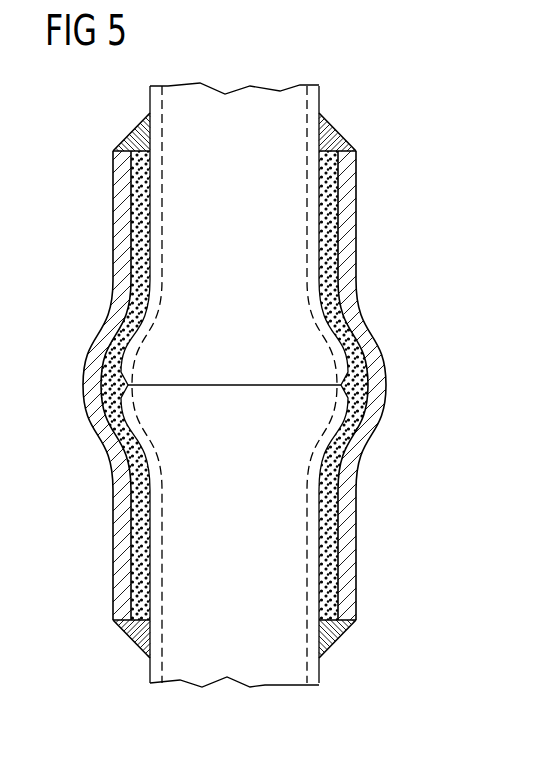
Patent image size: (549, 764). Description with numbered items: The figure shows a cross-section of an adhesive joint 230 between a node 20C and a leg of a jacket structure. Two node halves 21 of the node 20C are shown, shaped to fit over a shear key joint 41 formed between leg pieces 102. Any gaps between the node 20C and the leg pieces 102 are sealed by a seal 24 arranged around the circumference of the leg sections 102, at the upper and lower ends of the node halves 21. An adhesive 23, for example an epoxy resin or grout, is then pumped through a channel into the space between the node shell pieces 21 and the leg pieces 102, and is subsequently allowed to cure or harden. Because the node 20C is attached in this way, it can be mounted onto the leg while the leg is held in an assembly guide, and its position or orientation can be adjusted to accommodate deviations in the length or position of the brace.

The adhesive joint 230 is at (378, 290).
The leg pieces 102 is at (313, 225).
The shear key joint 41 is at (270, 386).
The adhesive 23 is at (150, 452).
The node halves 21 is at (102, 338).
The node 20C is at (348, 530).
The seal 24 is at (128, 140).